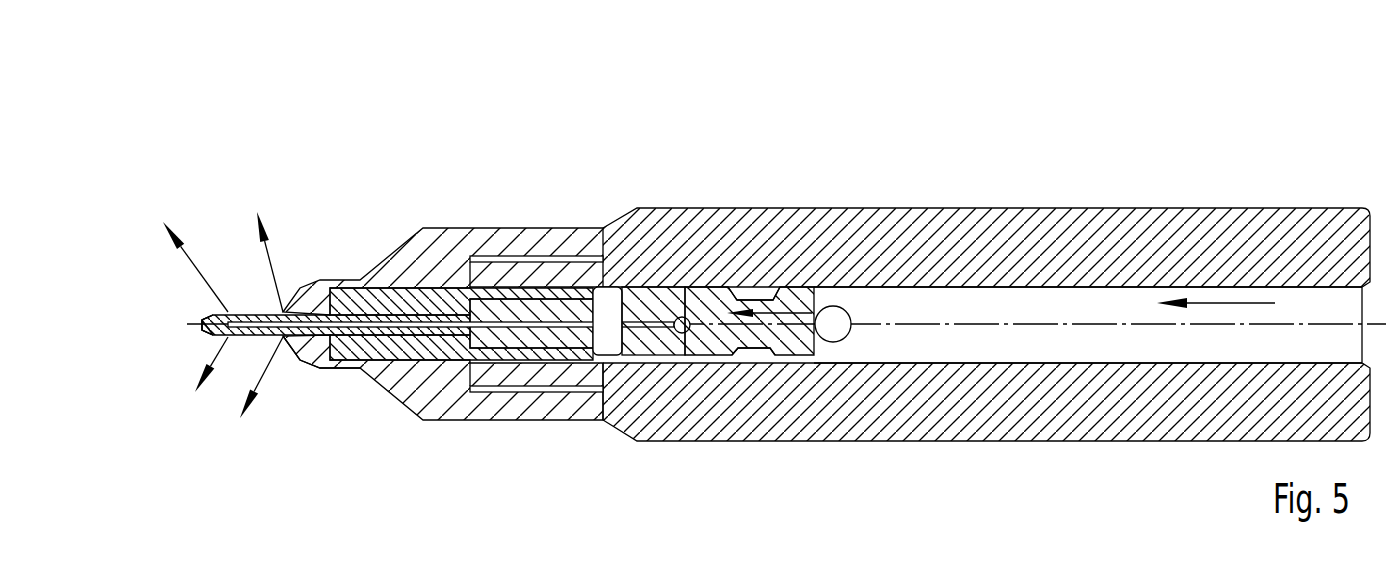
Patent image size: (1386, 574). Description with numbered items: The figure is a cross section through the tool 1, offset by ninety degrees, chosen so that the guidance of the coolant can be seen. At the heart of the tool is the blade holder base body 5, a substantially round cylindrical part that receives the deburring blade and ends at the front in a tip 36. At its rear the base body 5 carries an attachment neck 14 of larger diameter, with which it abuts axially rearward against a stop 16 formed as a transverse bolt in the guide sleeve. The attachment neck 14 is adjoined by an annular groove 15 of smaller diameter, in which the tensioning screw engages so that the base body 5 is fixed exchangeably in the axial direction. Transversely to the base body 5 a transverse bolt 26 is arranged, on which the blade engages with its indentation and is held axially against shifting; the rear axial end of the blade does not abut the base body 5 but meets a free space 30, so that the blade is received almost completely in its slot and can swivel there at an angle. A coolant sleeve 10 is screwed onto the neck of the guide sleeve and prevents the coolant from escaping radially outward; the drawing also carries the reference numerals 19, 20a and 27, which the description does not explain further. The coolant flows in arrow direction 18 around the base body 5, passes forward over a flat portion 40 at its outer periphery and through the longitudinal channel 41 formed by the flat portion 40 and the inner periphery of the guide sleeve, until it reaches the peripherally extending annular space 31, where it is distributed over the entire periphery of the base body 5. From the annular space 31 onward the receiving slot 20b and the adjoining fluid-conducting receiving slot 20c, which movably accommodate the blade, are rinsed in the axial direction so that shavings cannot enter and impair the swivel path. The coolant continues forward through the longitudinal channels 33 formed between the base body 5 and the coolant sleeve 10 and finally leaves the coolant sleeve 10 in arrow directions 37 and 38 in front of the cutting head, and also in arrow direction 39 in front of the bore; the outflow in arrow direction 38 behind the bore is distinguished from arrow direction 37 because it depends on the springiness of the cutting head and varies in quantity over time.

The tool 1 is at (997, 185).
The blade holder base body 5 is at (741, 233).
The coolant sleeve 10 is at (485, 228).
The attachment neck 14 is at (793, 330).
The annular groove 15 is at (757, 355).
The stop 16 is at (833, 309).
The arrow direction 18 is at (778, 298).
The bore 19 is at (1110, 300).
The needle body 20a is at (525, 337).
The receiving slot 20b is at (330, 315).
The fluid-conducting receiving slot 20c is at (261, 312).
The transverse bolt 26 is at (606, 300).
The groove 27 is at (510, 258).
The free space 30 is at (682, 316).
The annular space 31 is at (467, 288).
The longitudinal channels 33 is at (382, 368).
The tip 36 is at (217, 318).
The arrow direction 37 is at (258, 383).
The arrow direction 38 is at (274, 300).
The arrow direction 39 is at (190, 259).
The flat portion 40 is at (712, 355).
The longitudinal channel 41 is at (678, 355).